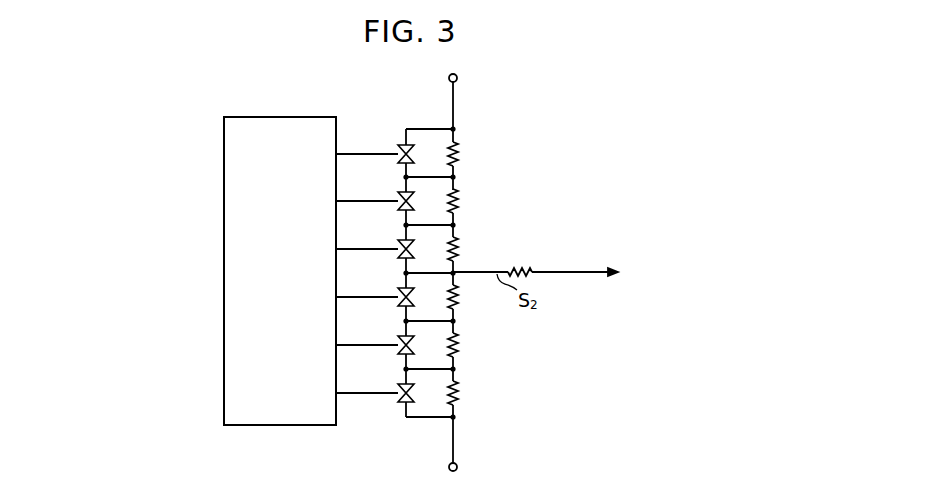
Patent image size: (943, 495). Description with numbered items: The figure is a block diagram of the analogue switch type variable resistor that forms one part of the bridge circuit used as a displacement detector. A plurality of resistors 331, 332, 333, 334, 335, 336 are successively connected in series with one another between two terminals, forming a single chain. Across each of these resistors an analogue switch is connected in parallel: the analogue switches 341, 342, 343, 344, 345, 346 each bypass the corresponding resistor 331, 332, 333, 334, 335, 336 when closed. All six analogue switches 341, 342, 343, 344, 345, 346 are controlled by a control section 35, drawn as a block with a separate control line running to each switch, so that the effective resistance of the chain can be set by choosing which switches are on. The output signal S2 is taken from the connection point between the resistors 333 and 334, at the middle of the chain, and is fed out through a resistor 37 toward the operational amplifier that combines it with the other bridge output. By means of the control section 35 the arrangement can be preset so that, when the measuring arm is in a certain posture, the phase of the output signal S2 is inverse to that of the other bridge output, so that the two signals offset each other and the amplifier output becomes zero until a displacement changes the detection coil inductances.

The control section 35 is at (224, 253).
The analogue switch 341 is at (398, 148).
The analogue switch 342 is at (398, 198).
The analogue switch 343 is at (398, 246).
The analogue switch 344 is at (398, 294).
The analogue switch 345 is at (398, 342).
The analogue switch 346 is at (398, 389).
The resistor 331 is at (460, 154).
The resistor 332 is at (460, 201).
The resistor 333 is at (460, 249).
The resistor 334 is at (460, 297).
The resistor 335 is at (460, 345).
The resistor 336 is at (460, 393).
The resistor 37 is at (524, 266).